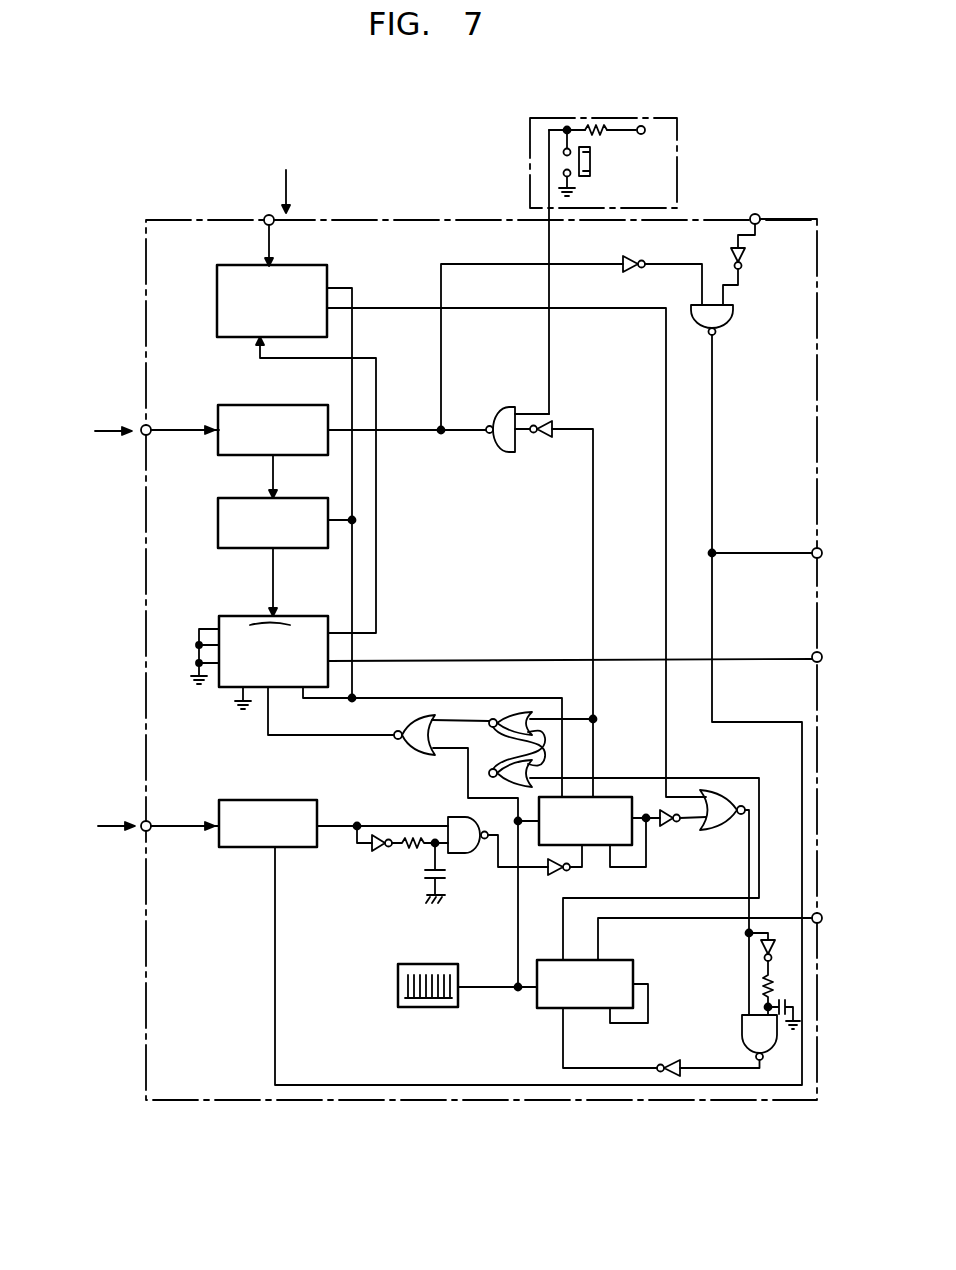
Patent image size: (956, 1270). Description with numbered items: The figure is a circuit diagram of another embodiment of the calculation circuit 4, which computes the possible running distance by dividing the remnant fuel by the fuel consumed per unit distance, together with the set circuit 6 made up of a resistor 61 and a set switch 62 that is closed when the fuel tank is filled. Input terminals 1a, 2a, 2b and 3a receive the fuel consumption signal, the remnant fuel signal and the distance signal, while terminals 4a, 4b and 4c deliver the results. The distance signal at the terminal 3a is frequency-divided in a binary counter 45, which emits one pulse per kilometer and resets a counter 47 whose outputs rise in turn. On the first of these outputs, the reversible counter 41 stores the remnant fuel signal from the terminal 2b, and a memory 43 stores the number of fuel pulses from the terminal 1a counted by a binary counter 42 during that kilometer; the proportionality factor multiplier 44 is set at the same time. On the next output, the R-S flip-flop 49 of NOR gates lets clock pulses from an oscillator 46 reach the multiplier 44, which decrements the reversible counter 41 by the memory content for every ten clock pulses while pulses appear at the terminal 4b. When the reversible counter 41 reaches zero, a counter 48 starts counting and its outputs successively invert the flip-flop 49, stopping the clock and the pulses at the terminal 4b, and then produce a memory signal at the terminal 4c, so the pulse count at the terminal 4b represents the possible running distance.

The calculation circuit 4 is at (416, 219).
The terminal 2b is at (268, 215).
The terminal 2a is at (755, 214).
The terminal 1a is at (140, 428).
The terminal 3a is at (140, 824).
The terminal 4a is at (822, 553).
The terminal 4b is at (822, 657).
The terminal 4c is at (822, 918).
The set circuit 6 is at (678, 150).
The resistor 61 is at (598, 133).
The set switch 62 is at (592, 178).
The reversible counter 41 is at (217, 301).
The binary counter 42 is at (236, 396).
The memory 43 is at (222, 497).
The proportionality factor multiplier 44 is at (233, 606).
The binary counter 45 is at (266, 800).
The oscillator 46 is at (421, 964).
The counter 47 is at (608, 797).
The counter 48 is at (605, 960).
The R-S flip-flop 49 is at (540, 745).